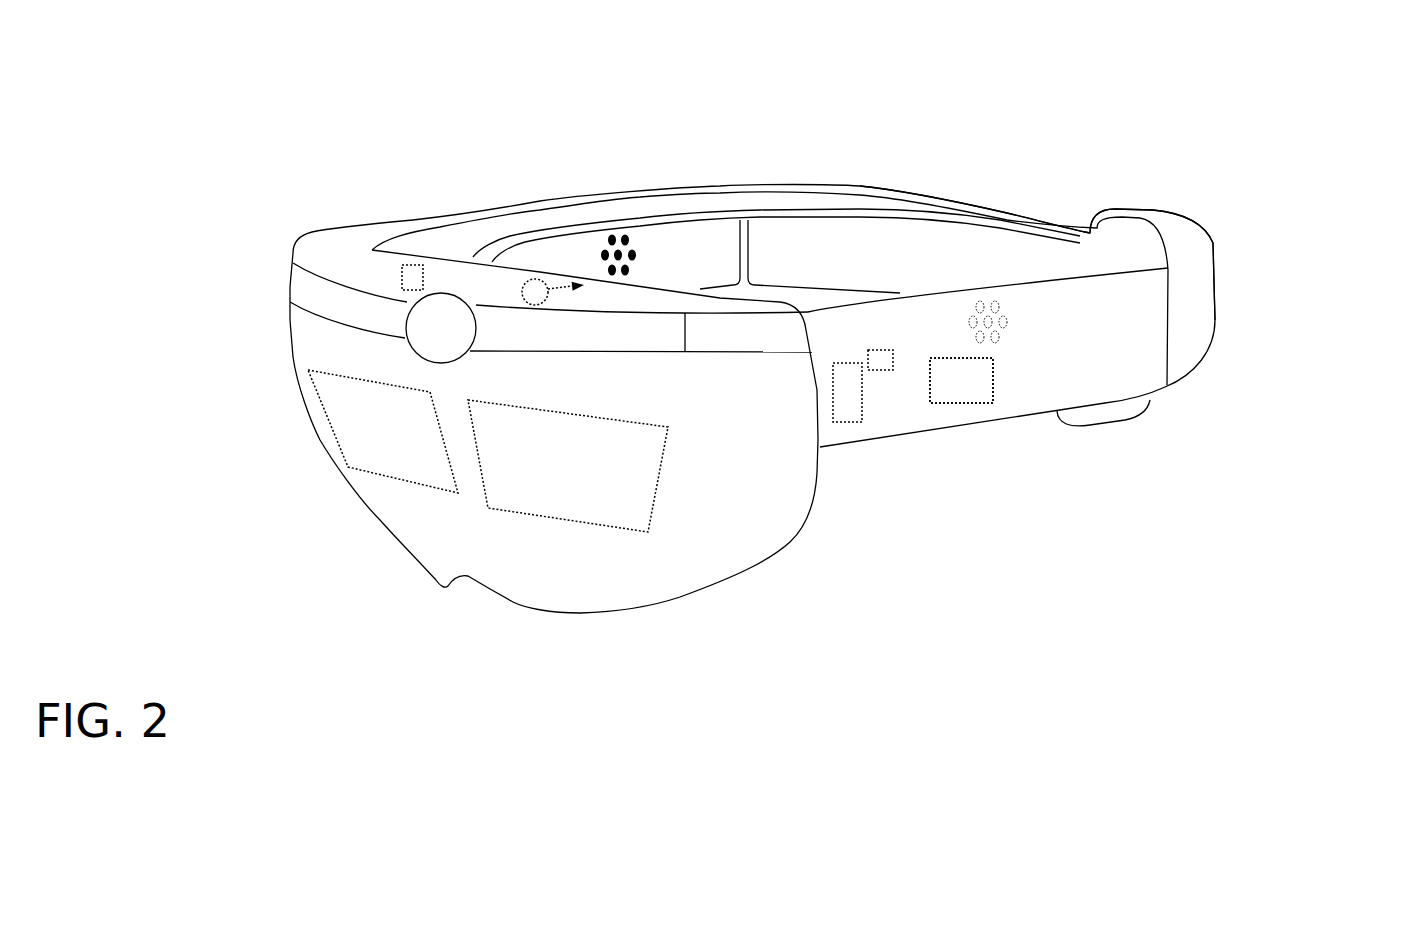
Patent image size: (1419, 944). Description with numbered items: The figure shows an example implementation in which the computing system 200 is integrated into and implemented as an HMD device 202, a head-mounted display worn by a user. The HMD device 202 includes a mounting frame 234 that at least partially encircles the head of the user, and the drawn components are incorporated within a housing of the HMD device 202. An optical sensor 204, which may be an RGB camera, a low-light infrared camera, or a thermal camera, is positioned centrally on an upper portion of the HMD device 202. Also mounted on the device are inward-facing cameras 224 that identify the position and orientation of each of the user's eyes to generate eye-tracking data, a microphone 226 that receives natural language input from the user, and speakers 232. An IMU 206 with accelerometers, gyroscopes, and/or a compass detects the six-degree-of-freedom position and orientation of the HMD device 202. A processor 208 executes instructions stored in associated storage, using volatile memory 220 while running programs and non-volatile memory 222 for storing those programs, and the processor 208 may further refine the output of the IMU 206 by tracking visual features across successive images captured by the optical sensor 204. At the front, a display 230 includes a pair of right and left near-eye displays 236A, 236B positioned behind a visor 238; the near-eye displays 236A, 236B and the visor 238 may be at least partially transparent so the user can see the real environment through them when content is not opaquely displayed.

The computing system 200 is at (1037, 143).
The HMD device 202 is at (1220, 263).
The optical sensor 204 is at (405, 354).
The IMU 206 is at (918, 337).
The processor 208 is at (847, 422).
The volatile memory 220 is at (993, 387).
The non-volatile memory 222 is at (993, 387).
The inward-facing cameras 224 is at (540, 279).
The microphone 226 is at (413, 264).
The display 230 is at (600, 607).
The speakers 232 is at (645, 253).
The mounting frame 234 is at (1035, 415).
The right near-eye display 236A is at (423, 487).
The left near-eye display 236B is at (506, 511).
The visor 238 is at (395, 545).